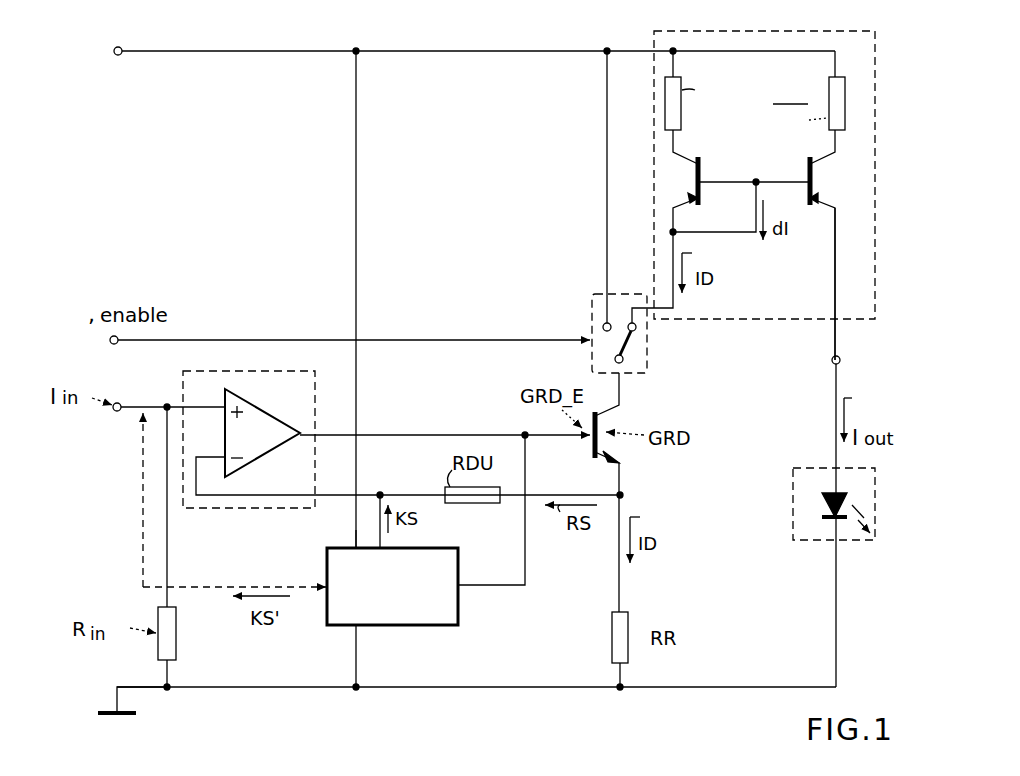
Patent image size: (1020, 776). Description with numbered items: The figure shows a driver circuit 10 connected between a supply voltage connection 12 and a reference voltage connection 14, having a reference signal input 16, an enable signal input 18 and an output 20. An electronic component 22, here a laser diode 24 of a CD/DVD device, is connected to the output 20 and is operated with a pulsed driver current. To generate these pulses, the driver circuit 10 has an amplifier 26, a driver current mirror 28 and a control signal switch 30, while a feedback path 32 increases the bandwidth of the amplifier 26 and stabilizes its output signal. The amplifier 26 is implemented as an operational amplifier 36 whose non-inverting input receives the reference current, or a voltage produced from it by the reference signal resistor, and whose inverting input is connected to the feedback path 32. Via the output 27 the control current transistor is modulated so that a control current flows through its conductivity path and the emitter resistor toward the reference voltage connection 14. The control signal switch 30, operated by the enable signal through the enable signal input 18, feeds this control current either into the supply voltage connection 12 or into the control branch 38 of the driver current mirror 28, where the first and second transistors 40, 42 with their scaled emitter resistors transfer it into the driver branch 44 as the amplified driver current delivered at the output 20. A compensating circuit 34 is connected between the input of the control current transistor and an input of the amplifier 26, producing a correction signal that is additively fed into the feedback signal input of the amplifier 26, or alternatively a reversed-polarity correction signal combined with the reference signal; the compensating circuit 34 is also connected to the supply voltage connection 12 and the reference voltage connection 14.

The driver circuit 10 is at (355, 44).
The supply voltage connection 12 is at (112, 52).
The reference voltage connection 14 is at (110, 698).
The reference signal input 16 is at (113, 411).
The enable signal input 18 is at (108, 339).
The output 20 is at (842, 360).
The electronic component 22 is at (790, 520).
The laser diode 24 is at (826, 492).
The amplifier 26 is at (200, 510).
The output of the operational amplifier 27 is at (312, 433).
The driver current mirror 28 is at (652, 31).
The control signal switch 30 is at (648, 350).
The feedback path 32 is at (292, 542).
The compensating circuit 34 is at (448, 628).
The operational amplifier 36 is at (262, 398).
The control branch 38 is at (733, 132).
The first transistor 40 is at (694, 183).
The second transistor 42 is at (817, 183).
The driver branch 44 is at (810, 233).